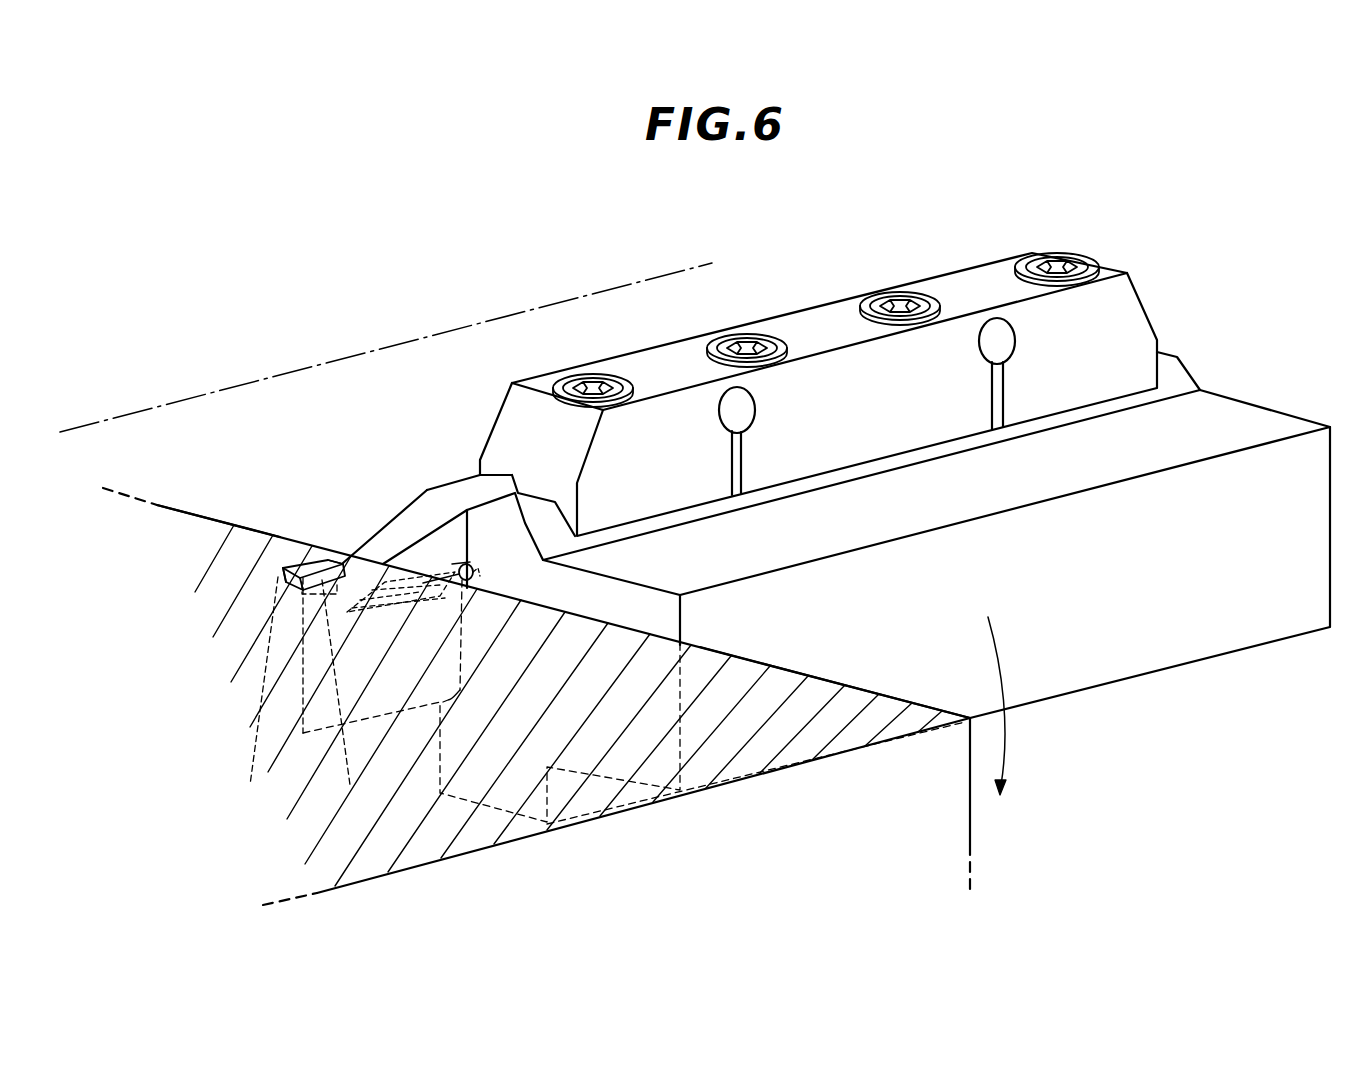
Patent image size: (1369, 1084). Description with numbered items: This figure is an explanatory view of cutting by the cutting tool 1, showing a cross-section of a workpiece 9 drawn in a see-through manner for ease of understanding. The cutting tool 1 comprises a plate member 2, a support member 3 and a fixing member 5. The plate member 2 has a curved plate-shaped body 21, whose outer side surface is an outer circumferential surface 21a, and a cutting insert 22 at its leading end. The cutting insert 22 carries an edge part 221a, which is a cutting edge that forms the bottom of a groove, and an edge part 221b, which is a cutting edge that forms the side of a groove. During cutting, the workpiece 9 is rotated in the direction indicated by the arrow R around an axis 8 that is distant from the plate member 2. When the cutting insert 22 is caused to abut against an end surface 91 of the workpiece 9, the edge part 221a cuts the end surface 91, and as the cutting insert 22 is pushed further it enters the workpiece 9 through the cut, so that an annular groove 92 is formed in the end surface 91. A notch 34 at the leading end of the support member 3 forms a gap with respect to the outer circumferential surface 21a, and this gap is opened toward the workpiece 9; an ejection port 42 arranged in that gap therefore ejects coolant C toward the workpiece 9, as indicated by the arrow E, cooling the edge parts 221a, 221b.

The cutting tool 1 is at (1216, 224).
The plate member 2 is at (389, 514).
The support member 3 is at (1260, 404).
The fixing member 5 is at (1030, 253).
The axis 8 is at (607, 288).
The workpiece 9 is at (975, 820).
The end surface 91 is at (885, 697).
The annular groove 92 is at (281, 566).
The body 21 is at (452, 498).
The outer circumferential surface 21a is at (450, 482).
The cutting insert 22 is at (299, 562).
The edge part 221a is at (283, 592).
The edge part 221b is at (320, 565).
The notch 34 is at (470, 566).
The ejection port 42 is at (478, 571).
The coolant C is at (424, 580).
The arrow E is at (462, 565).
The arrow R is at (1008, 731).